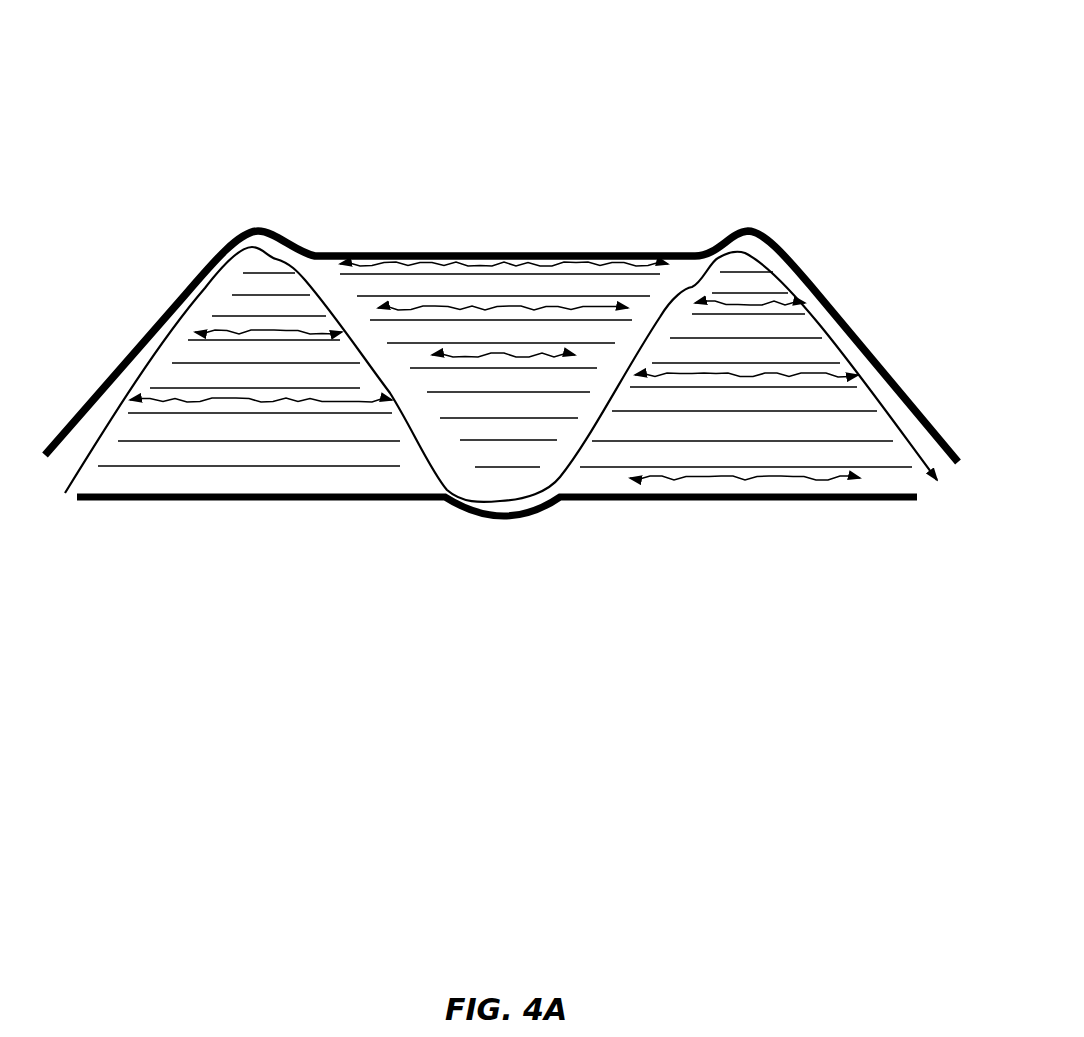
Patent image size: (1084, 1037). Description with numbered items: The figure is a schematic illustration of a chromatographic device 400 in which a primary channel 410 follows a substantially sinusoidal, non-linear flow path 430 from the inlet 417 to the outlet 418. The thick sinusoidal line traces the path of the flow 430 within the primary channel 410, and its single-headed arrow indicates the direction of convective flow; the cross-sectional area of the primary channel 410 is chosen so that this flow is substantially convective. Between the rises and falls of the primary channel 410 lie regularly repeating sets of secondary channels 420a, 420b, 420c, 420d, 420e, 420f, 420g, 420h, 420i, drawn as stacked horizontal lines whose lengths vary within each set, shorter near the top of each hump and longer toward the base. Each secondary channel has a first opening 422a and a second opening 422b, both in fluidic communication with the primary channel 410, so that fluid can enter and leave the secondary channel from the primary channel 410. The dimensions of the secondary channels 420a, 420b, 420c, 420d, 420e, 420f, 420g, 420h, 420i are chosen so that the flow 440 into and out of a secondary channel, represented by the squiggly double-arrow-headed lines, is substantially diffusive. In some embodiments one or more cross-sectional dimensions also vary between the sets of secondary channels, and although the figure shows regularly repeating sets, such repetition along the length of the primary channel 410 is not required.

The chromatographic device 400 is at (233, 120).
The primary channel 410 is at (88, 425).
The inlet 417 is at (50, 510).
The outlet 418 is at (950, 512).
The secondary channel 420a is at (296, 292).
The secondary channel 420b is at (319, 314).
The secondary channel 420c is at (776, 334).
The secondary channel 420d is at (304, 361).
The secondary channel 420e is at (307, 386).
The secondary channel 420f is at (745, 407).
The secondary channel 420g is at (376, 431).
The secondary channel 420h is at (273, 461).
The secondary channel 420i is at (268, 486).
The first opening 422a is at (335, 287).
The second opening 422b is at (659, 289).
The flow path 430 is at (752, 253).
The diffusive flow 440 is at (405, 262).